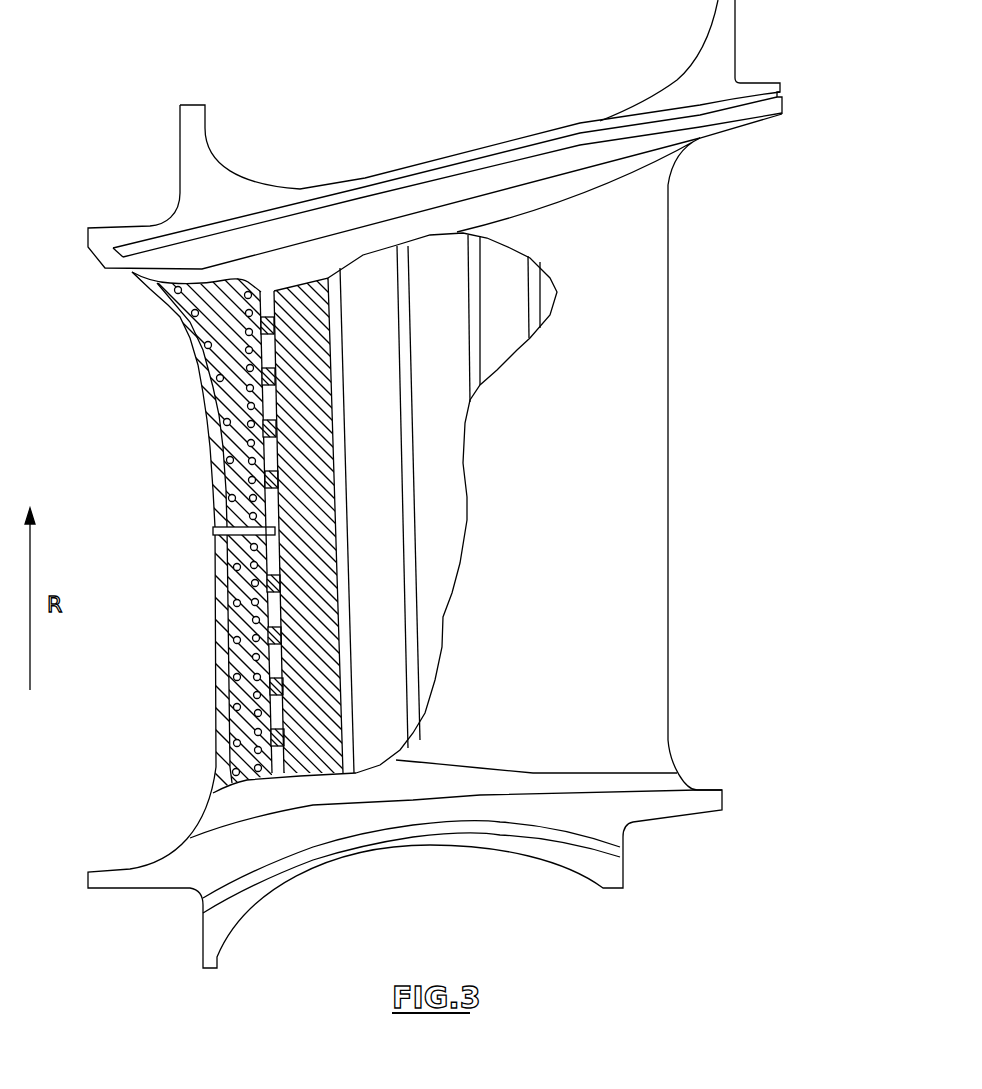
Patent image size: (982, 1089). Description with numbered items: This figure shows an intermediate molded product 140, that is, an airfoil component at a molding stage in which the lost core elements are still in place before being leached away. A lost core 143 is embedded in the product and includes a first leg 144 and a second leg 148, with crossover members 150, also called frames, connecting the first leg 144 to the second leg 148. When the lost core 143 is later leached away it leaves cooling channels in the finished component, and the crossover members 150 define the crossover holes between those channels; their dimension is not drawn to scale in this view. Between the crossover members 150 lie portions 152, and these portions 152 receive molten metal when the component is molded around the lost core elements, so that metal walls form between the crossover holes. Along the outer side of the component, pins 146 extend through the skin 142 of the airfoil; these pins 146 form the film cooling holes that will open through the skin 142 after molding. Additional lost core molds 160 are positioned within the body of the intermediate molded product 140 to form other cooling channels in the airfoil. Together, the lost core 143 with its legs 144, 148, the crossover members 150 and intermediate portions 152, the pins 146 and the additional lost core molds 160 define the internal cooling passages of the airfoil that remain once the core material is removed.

The intermediate molded product 140 is at (748, 270).
The skin 142 is at (180, 317).
The lost core 143 is at (240, 262).
The first leg 144 is at (233, 397).
The pins 146 is at (228, 462).
The second leg 148 is at (297, 312).
The crossover members 150 is at (264, 302).
The portions intermediate the crossover members 152 is at (270, 318).
The additional lost core molds 160 is at (368, 345).